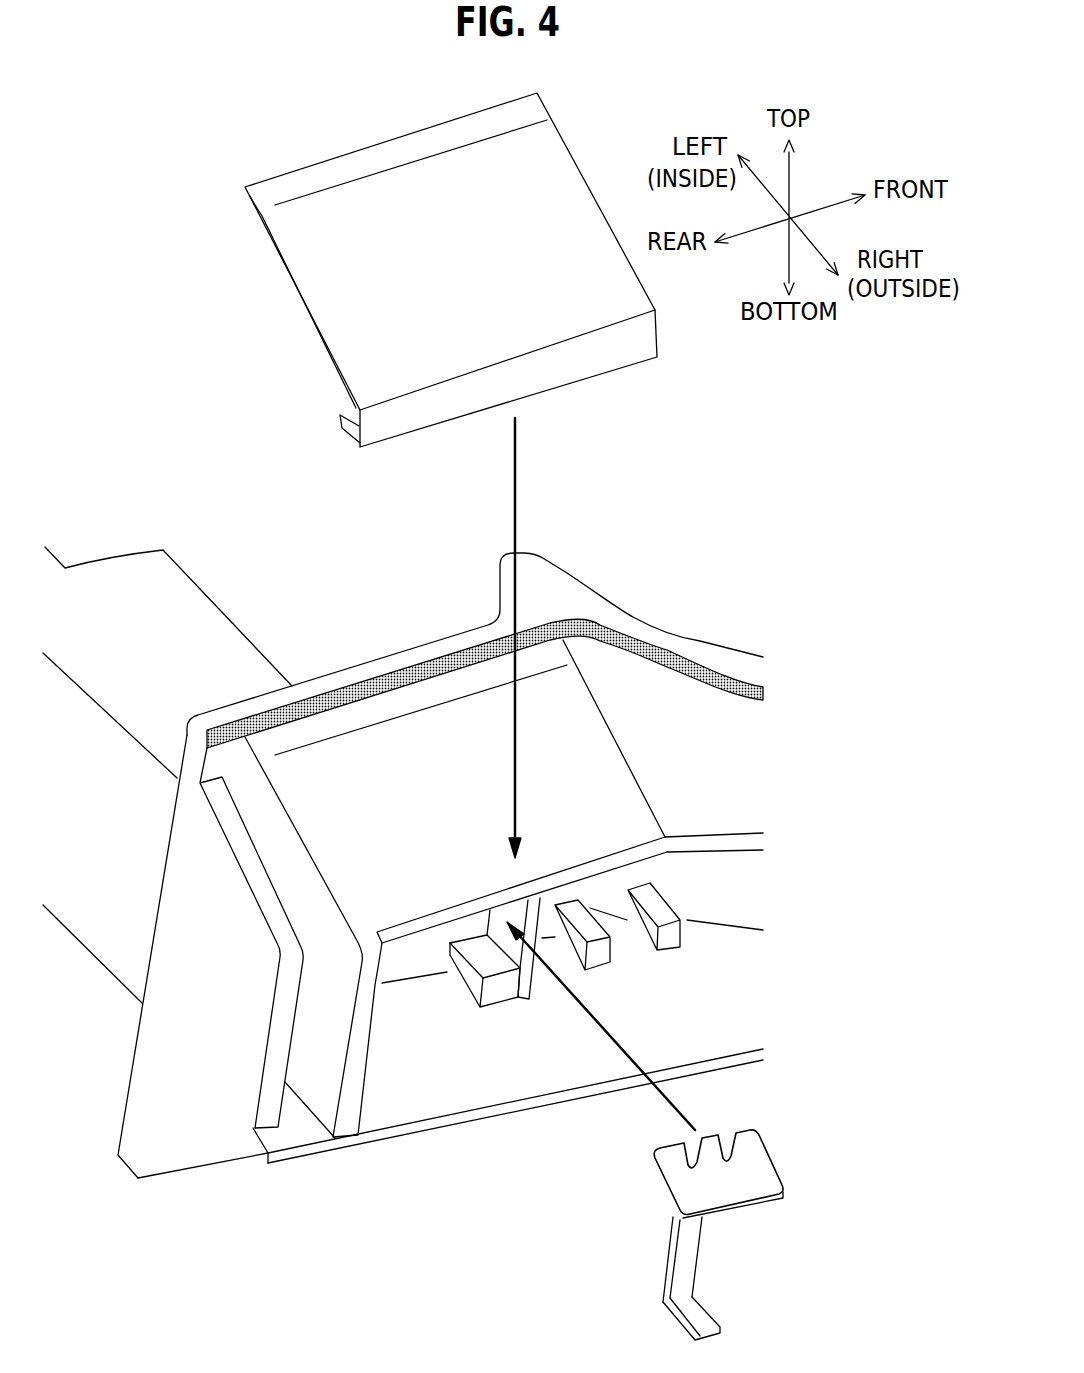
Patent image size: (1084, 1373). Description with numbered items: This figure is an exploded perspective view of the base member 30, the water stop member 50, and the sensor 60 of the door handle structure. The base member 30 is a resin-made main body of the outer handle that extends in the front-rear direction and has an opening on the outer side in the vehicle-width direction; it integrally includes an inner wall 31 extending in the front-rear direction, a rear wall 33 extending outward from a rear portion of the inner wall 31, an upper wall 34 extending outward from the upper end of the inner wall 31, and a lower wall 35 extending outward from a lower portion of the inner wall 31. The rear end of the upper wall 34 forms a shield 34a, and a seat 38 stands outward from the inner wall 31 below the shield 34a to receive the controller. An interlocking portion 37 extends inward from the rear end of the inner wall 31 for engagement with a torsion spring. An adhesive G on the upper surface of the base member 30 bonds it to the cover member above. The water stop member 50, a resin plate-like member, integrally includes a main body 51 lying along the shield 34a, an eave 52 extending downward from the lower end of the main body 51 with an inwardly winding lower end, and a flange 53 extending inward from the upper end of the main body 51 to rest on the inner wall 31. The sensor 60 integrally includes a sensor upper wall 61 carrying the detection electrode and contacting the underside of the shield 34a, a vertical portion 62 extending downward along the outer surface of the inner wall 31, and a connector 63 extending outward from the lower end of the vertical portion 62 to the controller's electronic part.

The base member 30 is at (688, 513).
The inner wall 31 is at (402, 962).
The rear wall 33 is at (327, 1053).
The upper wall 34 is at (488, 845).
The shield 34a is at (403, 753).
The lower wall 35 is at (500, 1122).
The interlocking portion 37 is at (178, 592).
The seat 38 is at (512, 992).
The adhesive G is at (327, 693).
The water stop member 50 is at (384, 270).
The main body 51 is at (332, 298).
The eave 52 is at (265, 423).
The flange 53 is at (245, 202).
The sensor 60 is at (776, 1237).
The sensor upper wall 61 is at (763, 1185).
The vertical portion 62 is at (690, 1255).
The connector 63 is at (753, 1321).